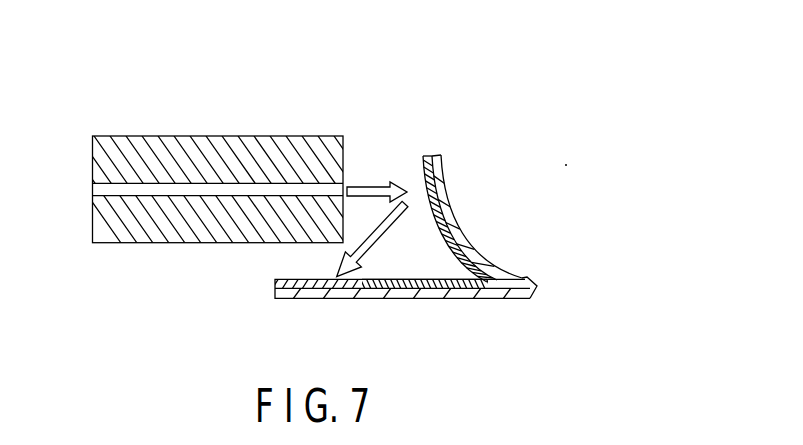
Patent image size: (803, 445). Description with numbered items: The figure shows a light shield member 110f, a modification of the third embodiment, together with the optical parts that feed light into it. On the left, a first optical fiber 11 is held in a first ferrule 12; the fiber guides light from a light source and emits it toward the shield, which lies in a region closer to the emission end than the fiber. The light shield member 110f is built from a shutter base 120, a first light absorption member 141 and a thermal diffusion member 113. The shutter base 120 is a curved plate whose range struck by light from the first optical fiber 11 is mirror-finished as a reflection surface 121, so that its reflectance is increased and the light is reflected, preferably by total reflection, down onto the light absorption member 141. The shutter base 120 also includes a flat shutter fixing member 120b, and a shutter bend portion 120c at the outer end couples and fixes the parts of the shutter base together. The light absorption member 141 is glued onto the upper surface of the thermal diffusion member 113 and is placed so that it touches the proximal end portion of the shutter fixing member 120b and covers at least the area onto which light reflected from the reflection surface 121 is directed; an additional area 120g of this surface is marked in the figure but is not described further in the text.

The first optical fiber 11 is at (97, 189).
The first ferrule 12 is at (97, 146).
The light shield member 110f is at (575, 159).
The thermal diffusion member 113 is at (442, 182).
The shutter base 120 is at (436, 218).
The shutter fixing member 120b is at (422, 299).
The shutter bend portion 120c is at (537, 286).
The contact region 120g is at (446, 266).
The reflection surface 121 is at (423, 163).
The first light absorption member 141 is at (293, 299).